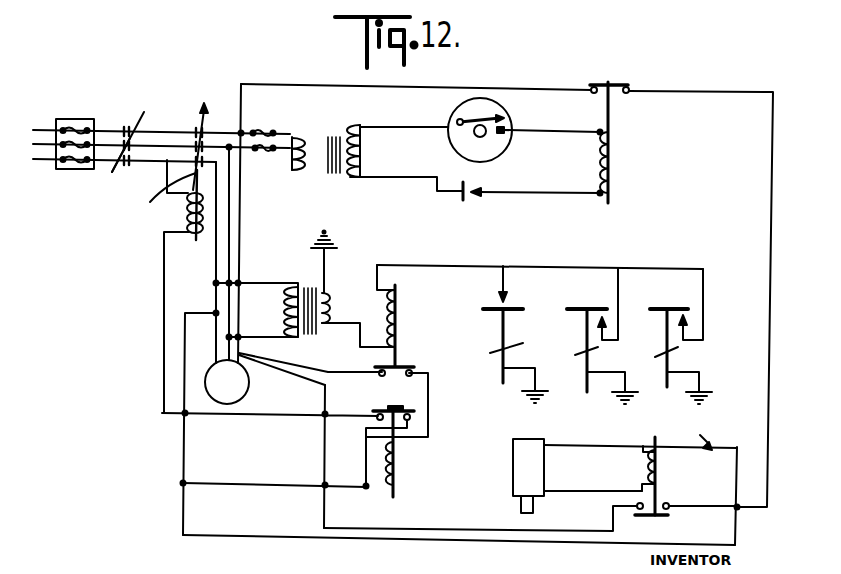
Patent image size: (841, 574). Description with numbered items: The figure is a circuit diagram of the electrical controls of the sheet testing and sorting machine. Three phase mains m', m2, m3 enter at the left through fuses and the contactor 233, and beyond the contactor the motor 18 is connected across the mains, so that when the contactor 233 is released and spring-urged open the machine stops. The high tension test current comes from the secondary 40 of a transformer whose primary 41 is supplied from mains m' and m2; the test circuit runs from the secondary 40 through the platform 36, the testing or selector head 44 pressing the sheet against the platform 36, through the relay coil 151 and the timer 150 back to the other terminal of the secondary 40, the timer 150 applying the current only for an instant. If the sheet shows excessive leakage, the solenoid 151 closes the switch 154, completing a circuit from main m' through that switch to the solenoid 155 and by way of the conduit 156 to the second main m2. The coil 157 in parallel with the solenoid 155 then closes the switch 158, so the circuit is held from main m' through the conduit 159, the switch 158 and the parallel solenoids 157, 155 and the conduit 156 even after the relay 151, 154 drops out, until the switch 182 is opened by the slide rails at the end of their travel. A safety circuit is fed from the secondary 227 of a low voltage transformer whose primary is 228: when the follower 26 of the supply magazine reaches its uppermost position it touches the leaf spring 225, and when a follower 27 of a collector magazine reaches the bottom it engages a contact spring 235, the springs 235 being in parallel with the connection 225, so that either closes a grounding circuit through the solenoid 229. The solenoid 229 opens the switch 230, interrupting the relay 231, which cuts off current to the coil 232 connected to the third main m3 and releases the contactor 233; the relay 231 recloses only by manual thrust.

The motor 18 is at (248, 386).
The follower 26 is at (494, 311).
The follower 27 is at (588, 307).
The platform 36 is at (465, 202).
The transformer secondary 40 is at (359, 127).
The transformer primary 41 is at (311, 137).
The testing head 44 is at (479, 197).
The timer 150 is at (511, 115).
The relay coil 151 is at (617, 173).
The switch 154 is at (627, 83).
The solenoid 155 is at (544, 471).
The conduit 156 is at (231, 196).
The coil 157 is at (650, 467).
The switch 158 is at (656, 517).
The conduit 159 is at (240, 222).
The switch 182 is at (711, 433).
The leaf spring 225 is at (510, 290).
The secondary 227 is at (332, 293).
The primary 228 is at (284, 310).
The solenoid 229 is at (403, 302).
The switch 230 is at (410, 368).
The relay 231 is at (436, 437).
The coil 232 is at (190, 236).
The contactor 233 is at (121, 182).
The contact spring 235 is at (608, 322).
The main m' is at (181, 139).
The second main m2 is at (222, 148).
The third main m3 is at (134, 164).